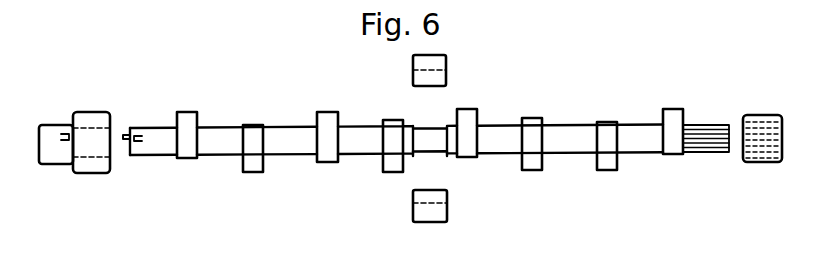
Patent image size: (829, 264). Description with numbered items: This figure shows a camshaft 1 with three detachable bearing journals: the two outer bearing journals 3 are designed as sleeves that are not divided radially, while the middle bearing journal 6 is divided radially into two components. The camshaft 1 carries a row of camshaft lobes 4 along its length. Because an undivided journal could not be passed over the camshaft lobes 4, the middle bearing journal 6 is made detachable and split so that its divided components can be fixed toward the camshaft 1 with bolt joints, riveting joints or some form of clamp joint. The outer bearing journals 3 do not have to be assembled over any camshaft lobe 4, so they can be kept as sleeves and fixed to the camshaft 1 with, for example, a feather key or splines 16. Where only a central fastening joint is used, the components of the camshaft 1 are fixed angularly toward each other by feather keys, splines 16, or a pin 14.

The camshaft 1 is at (292, 151).
The bearing journal 3 is at (96, 152).
The camshaft lobe 4 is at (186, 112).
The middle bearing journal 6 is at (413, 62).
The pin 14 is at (125, 130).
The splines 16 is at (710, 125).